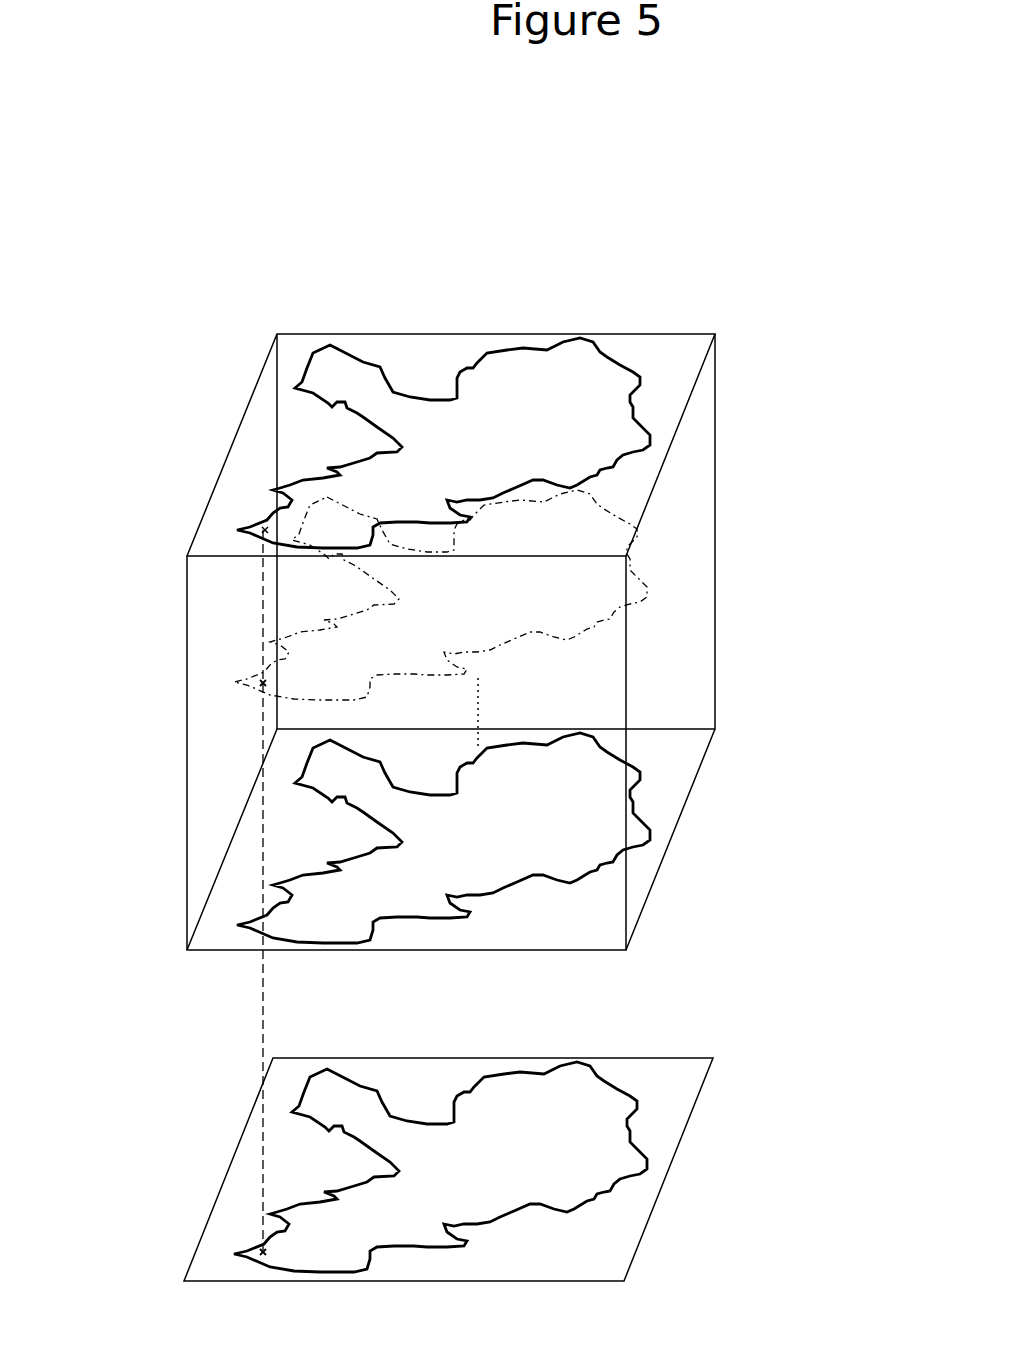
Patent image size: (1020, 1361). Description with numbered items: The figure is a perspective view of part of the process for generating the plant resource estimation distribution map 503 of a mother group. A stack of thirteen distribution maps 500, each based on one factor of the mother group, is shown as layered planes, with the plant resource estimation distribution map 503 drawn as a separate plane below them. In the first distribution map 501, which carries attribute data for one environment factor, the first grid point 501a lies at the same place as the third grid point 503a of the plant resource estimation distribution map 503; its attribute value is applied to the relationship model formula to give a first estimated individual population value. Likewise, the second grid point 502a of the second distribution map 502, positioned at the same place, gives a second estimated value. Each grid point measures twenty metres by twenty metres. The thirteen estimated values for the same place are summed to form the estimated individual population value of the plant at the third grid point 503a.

The distribution maps 500 is at (733, 352).
The first distribution map 501 is at (400, 392).
The first grid point 501a is at (265, 530).
The second distribution map 502 is at (289, 633).
The second grid point 502a is at (264, 682).
The plant resource estimation distribution map 503 is at (293, 1205).
The third grid point 503a is at (262, 1254).